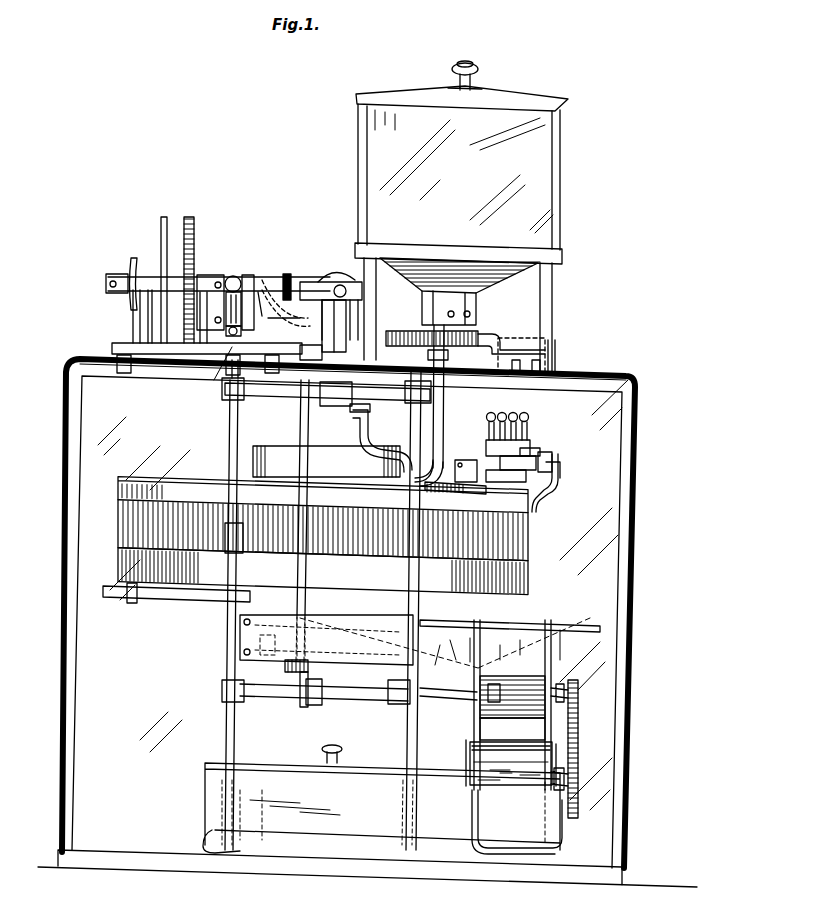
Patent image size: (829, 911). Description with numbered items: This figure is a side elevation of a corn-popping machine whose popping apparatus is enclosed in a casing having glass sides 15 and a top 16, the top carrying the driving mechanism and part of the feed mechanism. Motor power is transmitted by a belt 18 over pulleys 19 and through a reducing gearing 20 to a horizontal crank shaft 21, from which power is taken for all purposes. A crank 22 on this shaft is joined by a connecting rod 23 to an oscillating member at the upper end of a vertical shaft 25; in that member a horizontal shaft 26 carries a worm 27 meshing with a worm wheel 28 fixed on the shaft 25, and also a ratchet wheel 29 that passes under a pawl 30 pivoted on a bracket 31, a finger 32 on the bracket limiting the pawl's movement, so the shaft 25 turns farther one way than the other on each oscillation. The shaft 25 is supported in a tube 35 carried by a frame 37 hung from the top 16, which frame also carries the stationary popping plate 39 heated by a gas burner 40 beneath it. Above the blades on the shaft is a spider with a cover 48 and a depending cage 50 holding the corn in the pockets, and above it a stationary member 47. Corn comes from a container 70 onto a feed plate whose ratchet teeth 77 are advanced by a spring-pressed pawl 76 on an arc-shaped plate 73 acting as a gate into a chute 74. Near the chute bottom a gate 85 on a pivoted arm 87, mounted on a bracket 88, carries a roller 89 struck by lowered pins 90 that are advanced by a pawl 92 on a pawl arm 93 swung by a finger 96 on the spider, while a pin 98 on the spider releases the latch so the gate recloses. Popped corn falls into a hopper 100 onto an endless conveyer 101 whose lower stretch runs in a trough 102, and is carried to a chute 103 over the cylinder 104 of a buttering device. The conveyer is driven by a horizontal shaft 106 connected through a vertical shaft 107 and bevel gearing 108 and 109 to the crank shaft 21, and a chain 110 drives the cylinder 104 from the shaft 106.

The glass sides 15 is at (632, 650).
The top 16 is at (596, 376).
The belt 18 is at (164, 217).
The pulleys 19 is at (160, 227).
The reducing gearing 20 is at (190, 217).
The crank shaft 21 is at (108, 285).
The crank 22 is at (220, 275).
The connecting rod 23 is at (232, 362).
The vertical shaft 25 is at (338, 282).
The horizontal shaft 26 is at (233, 336).
The worm 27 is at (262, 280).
The worm wheel 28 is at (300, 292).
The ratchet wheel 29 is at (230, 400).
The pawl 30 is at (320, 282).
The bracket 31 is at (323, 330).
The finger 32 is at (360, 283).
The tube 35 is at (312, 392).
The frame 37 is at (390, 440).
The popping plate 39 is at (530, 584).
The gas burner 40 is at (200, 600).
The stationary member 47 is at (296, 456).
The cover 48 is at (190, 476).
The cage 50 is at (122, 488).
The container 70 is at (560, 175).
The arc-shaped plate 73 is at (430, 352).
The chute 74 is at (445, 404).
The spring-pressed pawl 76 is at (486, 340).
The ratchet teeth 77 is at (388, 338).
The gate 85 is at (440, 468).
The pivoted arm 87 is at (474, 462).
The bracket 88 is at (513, 481).
The roller 89 is at (508, 440).
The pins 90 is at (524, 455).
The pawl 92 is at (546, 450).
The pawl arm 93 is at (548, 480).
The finger 96 is at (556, 466).
The pin 98 is at (452, 490).
The hopper 100 is at (565, 630).
The endless conveyer 101 is at (480, 700).
The trough 102 is at (522, 720).
The chute 103 is at (472, 744).
The cylinder 104 is at (540, 762).
The horizontal shaft 106 is at (384, 702).
The vertical shaft 107 is at (296, 398).
The bevel gearing 108 is at (302, 708).
The bevel gearing 109 is at (289, 274).
The chain 110 is at (574, 720).